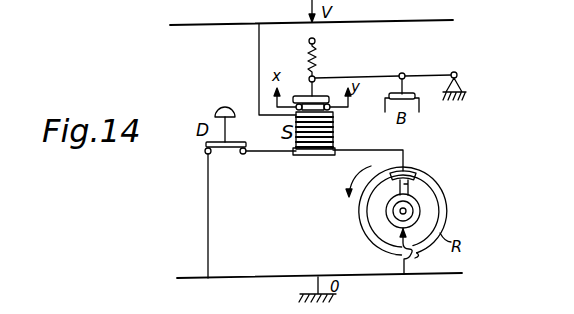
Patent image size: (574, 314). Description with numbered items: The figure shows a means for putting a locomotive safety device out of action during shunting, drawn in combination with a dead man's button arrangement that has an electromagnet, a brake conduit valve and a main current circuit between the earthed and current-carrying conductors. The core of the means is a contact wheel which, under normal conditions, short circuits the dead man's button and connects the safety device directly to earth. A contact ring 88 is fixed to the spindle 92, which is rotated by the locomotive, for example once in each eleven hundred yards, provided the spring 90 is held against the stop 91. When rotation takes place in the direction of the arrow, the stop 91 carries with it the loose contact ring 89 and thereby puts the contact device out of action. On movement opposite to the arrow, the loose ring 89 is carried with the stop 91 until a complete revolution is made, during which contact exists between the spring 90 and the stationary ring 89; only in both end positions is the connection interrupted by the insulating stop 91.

The contact ring 88 is at (420, 212).
The loose contact ring 89 is at (443, 190).
The spring 90 is at (412, 184).
The stop 91 is at (399, 169).
The spindle 92 is at (394, 214).